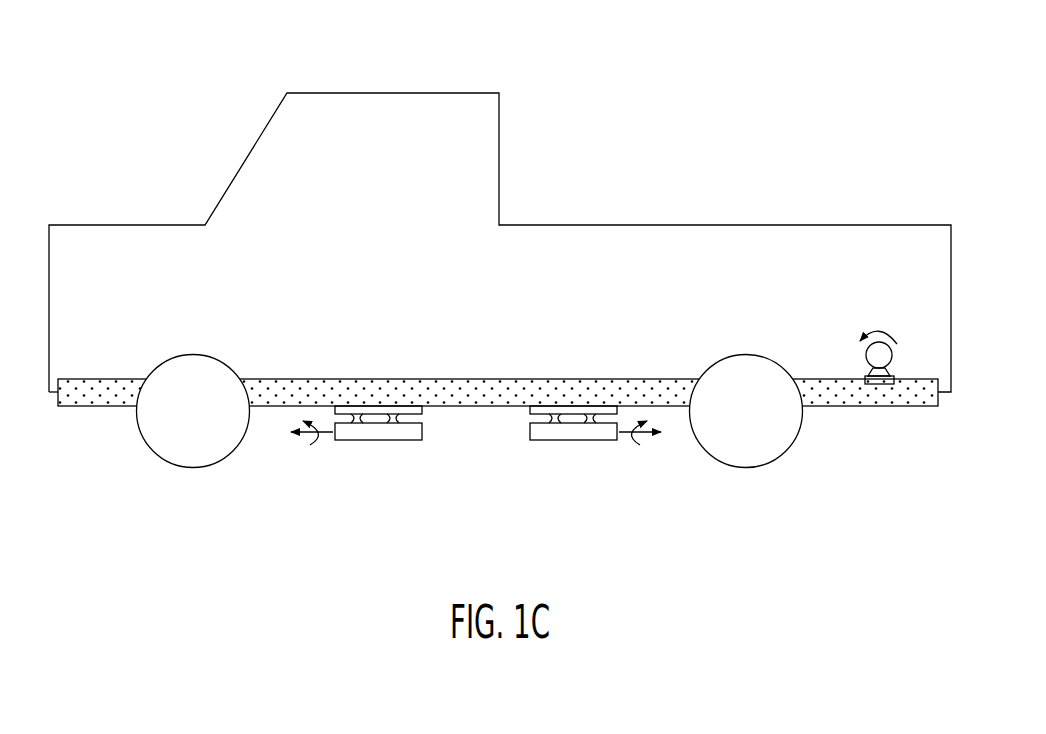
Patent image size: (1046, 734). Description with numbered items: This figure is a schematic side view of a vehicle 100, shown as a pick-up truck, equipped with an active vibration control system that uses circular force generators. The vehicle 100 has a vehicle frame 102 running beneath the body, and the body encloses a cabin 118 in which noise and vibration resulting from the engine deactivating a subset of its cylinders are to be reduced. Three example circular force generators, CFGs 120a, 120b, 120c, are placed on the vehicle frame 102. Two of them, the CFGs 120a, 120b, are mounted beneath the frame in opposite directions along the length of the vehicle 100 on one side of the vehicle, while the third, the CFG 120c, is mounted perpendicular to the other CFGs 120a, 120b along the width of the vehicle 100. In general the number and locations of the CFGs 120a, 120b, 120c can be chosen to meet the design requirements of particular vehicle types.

The vehicle 100 is at (170, 107).
The cabin 118 is at (377, 205).
The vehicle frame 102 is at (476, 378).
The CFG 120a is at (350, 440).
The CFG 120b is at (545, 441).
The CFG 120c is at (863, 355).